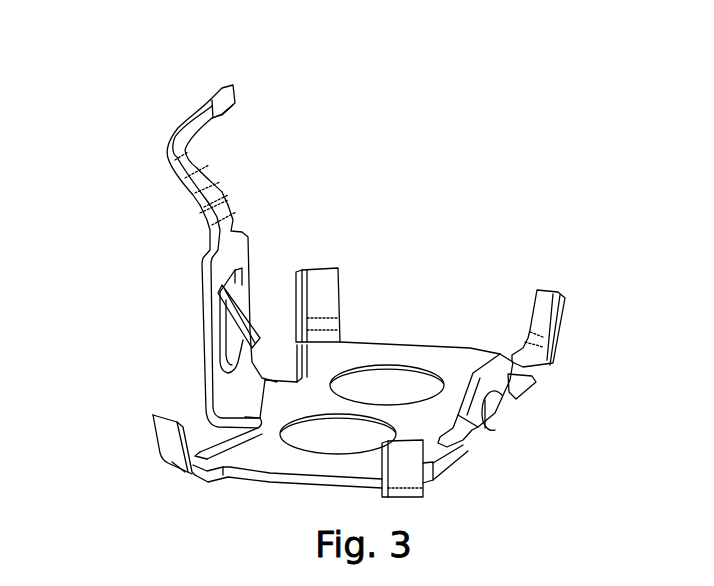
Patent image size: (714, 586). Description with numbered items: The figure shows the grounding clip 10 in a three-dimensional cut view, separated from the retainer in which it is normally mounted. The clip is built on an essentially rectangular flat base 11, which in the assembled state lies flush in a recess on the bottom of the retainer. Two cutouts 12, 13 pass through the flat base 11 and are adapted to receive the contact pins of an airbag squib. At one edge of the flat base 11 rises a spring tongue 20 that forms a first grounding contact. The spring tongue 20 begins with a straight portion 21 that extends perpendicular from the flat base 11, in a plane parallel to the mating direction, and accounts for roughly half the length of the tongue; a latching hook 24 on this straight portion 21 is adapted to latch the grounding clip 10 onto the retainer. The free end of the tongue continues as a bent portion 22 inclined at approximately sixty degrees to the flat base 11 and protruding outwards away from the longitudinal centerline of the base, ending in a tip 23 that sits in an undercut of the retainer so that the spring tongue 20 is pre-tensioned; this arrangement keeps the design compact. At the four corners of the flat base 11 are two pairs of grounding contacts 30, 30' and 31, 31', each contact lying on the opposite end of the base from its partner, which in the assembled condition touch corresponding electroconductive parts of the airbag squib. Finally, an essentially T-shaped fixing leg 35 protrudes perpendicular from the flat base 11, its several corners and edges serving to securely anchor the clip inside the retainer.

The grounding clip 10 is at (513, 253).
The flat base 11 is at (355, 350).
The cutout 12 is at (393, 385).
The cutout 13 is at (340, 437).
The spring tongue 20 is at (240, 186).
The straight portion 21 is at (198, 288).
The bent portion 22 is at (161, 149).
The tip 23 is at (225, 85).
The latching hook 24 is at (242, 320).
The grounding contact 30 is at (137, 454).
The grounding contact 30' is at (584, 328).
The grounding contact 31 is at (453, 475).
The grounding contact 31' is at (334, 266).
The fixing leg 35 is at (515, 396).